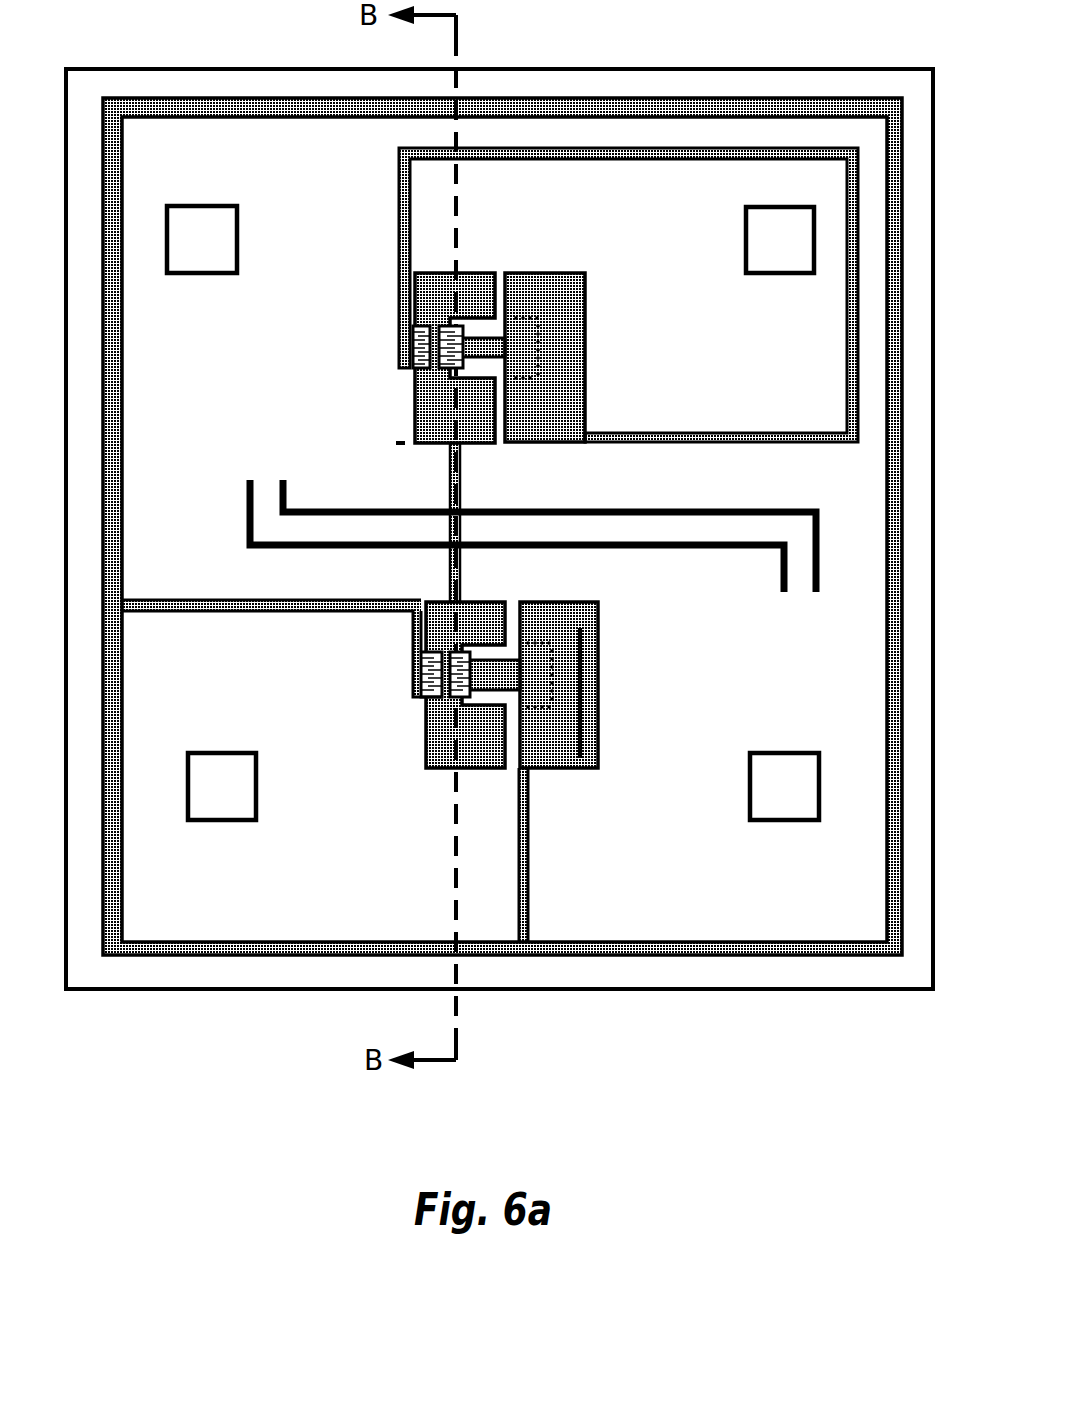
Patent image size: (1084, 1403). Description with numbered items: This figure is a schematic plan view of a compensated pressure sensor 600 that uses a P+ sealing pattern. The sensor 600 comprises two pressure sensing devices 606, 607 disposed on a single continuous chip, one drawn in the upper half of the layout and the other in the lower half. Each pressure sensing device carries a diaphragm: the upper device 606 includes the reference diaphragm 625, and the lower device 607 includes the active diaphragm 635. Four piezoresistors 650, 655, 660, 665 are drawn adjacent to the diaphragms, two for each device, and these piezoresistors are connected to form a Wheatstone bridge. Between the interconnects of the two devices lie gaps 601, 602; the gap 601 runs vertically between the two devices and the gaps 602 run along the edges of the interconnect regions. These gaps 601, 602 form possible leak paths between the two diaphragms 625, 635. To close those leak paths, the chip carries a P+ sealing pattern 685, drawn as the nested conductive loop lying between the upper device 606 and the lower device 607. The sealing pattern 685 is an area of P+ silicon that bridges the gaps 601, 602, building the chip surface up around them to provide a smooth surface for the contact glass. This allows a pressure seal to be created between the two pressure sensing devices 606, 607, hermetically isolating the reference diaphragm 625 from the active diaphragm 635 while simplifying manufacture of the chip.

The sensor 600 is at (176, 45).
The gap 601 is at (450, 487).
The gap 602 is at (403, 215).
The pressure sensing device 606 is at (545, 238).
The pressure sensing device 607 is at (635, 632).
The reference diaphragm 625 is at (567, 348).
The active diaphragm 635 is at (566, 719).
The piezoresistor 650 is at (414, 312).
The piezoresistor 655 is at (449, 326).
The piezoresistor 660 is at (462, 650).
The piezoresistor 665 is at (435, 650).
The P+ sealing pattern 685 is at (280, 480).